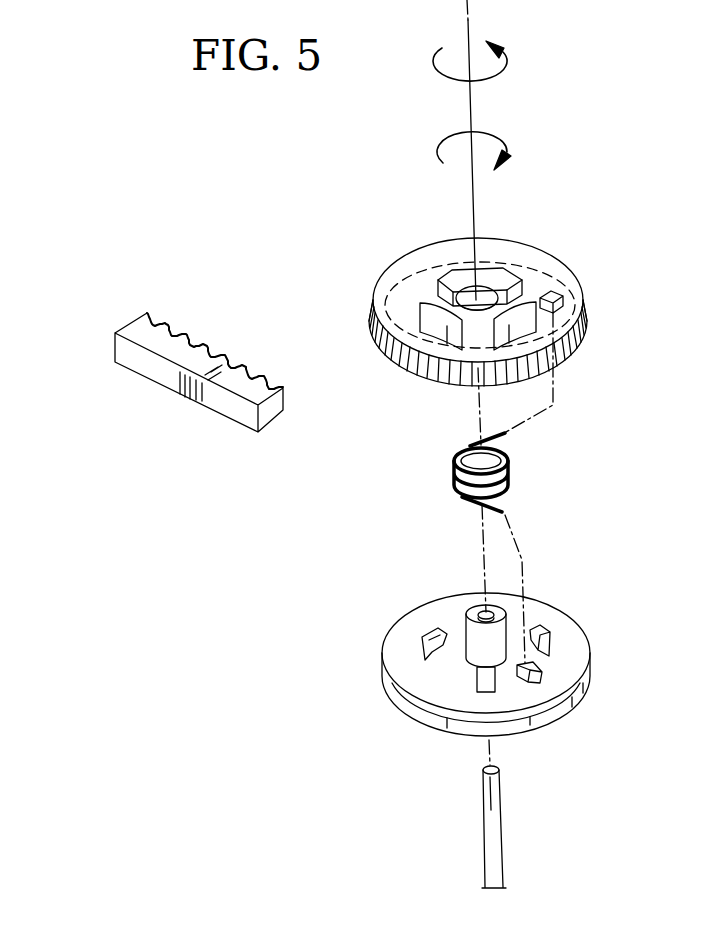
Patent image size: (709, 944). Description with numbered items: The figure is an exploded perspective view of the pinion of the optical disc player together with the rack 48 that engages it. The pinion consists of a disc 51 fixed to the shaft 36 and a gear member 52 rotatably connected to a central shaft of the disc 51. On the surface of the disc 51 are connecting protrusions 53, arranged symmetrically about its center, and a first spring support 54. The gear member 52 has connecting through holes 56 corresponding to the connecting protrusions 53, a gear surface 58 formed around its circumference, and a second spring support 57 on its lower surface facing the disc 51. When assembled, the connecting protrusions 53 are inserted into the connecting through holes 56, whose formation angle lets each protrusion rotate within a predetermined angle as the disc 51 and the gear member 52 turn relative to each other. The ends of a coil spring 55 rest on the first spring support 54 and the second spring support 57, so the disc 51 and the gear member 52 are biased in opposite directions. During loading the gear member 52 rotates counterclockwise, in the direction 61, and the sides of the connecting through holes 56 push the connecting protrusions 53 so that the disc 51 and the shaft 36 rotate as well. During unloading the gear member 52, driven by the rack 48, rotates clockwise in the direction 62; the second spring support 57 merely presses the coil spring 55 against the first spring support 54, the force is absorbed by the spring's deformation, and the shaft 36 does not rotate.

The shaft 36 is at (493, 830).
The rack 48 is at (152, 368).
The disc 51 is at (487, 685).
The gear member 52 is at (507, 327).
The connecting protrusions 53 is at (430, 633).
The first spring support 54 is at (545, 672).
The coil spring 55 is at (508, 461).
The connecting through holes 56 is at (490, 274).
The second spring support 57 is at (583, 334).
The gear surface 58 is at (420, 370).
The counterclockwise rotation direction 61 is at (435, 60).
The clockwise rotation direction 62 is at (440, 145).